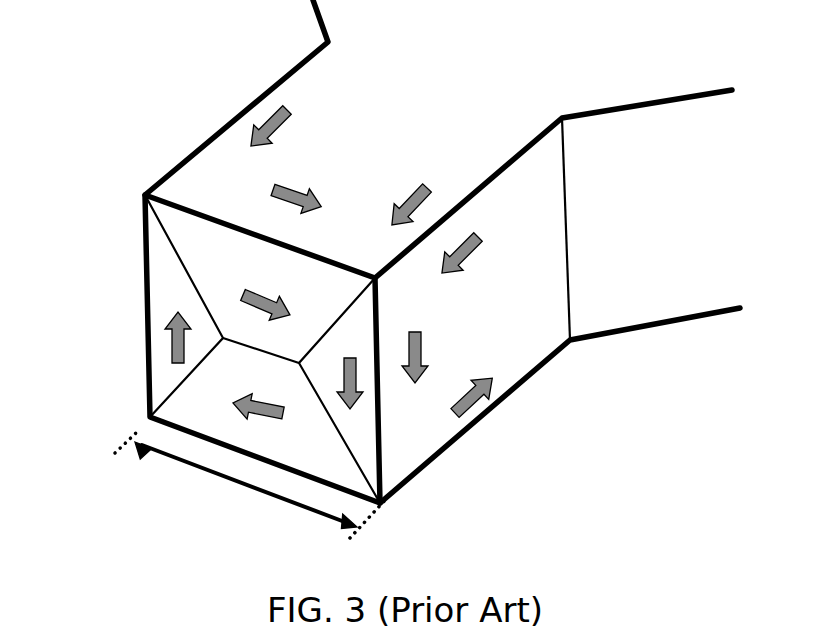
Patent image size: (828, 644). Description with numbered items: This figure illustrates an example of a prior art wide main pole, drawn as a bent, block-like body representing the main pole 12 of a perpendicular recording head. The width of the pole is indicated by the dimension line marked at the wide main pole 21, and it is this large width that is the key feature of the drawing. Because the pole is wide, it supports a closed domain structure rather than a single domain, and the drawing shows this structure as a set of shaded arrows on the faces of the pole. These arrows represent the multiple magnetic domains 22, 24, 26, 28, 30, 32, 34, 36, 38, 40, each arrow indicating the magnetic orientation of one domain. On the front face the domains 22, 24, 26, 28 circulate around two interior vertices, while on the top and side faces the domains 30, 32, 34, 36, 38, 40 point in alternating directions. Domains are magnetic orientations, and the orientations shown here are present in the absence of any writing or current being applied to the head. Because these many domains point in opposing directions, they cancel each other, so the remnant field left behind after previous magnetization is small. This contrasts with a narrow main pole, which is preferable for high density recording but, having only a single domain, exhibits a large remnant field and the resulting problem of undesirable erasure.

The main pole 12 is at (129, 165).
The wide main pole width 21 is at (218, 478).
The domain 22 is at (242, 307).
The domain 24 is at (252, 418).
The domain 26 is at (167, 323).
The domain 28 is at (370, 383).
The domain 30 is at (425, 355).
The domain 32 is at (473, 377).
The domain 34 is at (463, 240).
The domain 36 is at (403, 192).
The domain 38 is at (285, 180).
The domain 40 is at (273, 110).